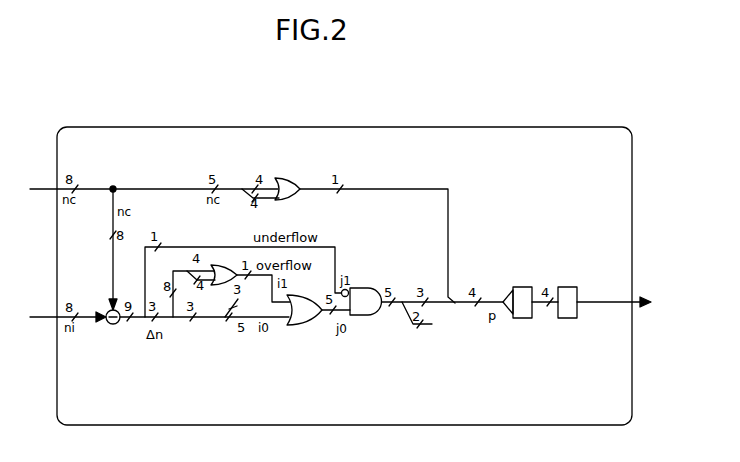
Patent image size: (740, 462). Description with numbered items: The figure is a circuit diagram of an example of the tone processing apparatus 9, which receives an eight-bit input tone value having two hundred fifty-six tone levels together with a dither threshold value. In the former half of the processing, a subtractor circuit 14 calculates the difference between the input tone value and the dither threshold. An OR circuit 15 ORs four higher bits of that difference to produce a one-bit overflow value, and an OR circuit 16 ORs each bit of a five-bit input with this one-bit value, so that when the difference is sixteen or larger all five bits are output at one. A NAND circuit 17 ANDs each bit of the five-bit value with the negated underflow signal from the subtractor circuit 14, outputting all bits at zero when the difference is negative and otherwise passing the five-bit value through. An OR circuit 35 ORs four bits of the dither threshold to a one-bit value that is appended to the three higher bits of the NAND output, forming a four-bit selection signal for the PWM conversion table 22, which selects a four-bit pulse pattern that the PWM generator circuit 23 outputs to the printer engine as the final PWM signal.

The tone processing apparatus 9 is at (443, 127).
The subtractor circuit 14 is at (113, 325).
The OR circuit 15 is at (222, 265).
The OR circuit 16 is at (300, 326).
The NAND circuit 17 is at (365, 316).
The PWM conversion table 22 is at (522, 287).
The PWM generator circuit 23 is at (568, 287).
The OR circuit 35 is at (287, 178).